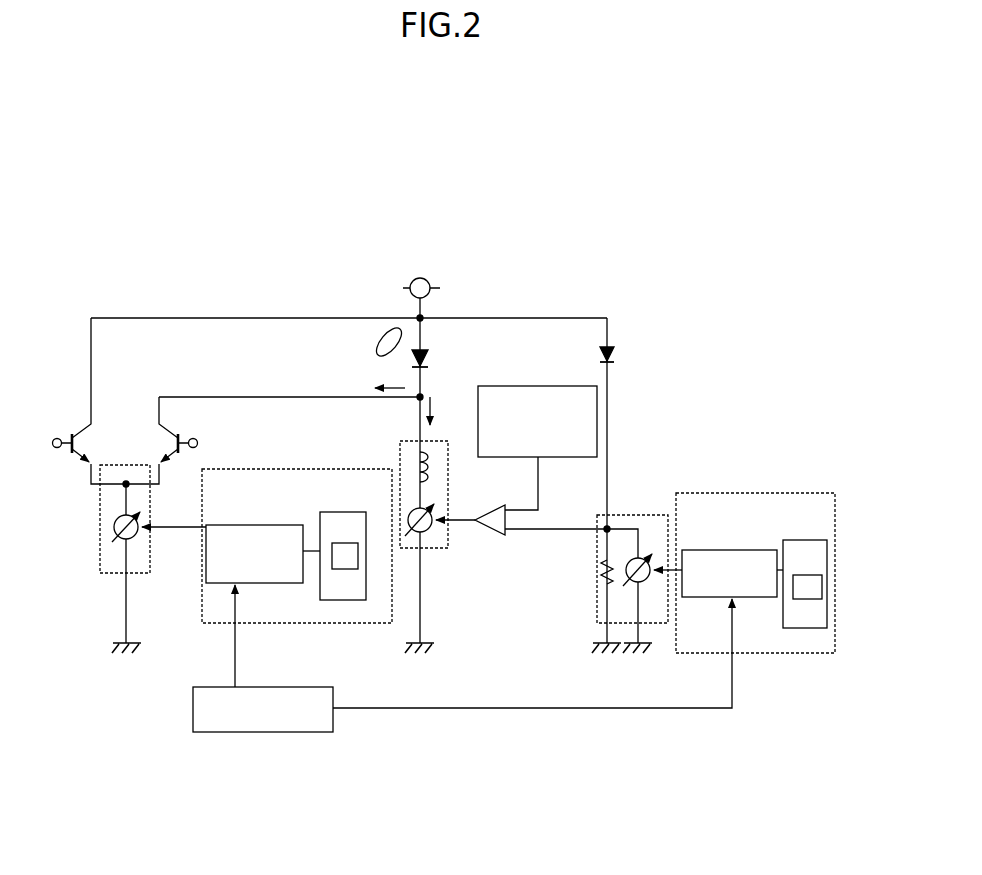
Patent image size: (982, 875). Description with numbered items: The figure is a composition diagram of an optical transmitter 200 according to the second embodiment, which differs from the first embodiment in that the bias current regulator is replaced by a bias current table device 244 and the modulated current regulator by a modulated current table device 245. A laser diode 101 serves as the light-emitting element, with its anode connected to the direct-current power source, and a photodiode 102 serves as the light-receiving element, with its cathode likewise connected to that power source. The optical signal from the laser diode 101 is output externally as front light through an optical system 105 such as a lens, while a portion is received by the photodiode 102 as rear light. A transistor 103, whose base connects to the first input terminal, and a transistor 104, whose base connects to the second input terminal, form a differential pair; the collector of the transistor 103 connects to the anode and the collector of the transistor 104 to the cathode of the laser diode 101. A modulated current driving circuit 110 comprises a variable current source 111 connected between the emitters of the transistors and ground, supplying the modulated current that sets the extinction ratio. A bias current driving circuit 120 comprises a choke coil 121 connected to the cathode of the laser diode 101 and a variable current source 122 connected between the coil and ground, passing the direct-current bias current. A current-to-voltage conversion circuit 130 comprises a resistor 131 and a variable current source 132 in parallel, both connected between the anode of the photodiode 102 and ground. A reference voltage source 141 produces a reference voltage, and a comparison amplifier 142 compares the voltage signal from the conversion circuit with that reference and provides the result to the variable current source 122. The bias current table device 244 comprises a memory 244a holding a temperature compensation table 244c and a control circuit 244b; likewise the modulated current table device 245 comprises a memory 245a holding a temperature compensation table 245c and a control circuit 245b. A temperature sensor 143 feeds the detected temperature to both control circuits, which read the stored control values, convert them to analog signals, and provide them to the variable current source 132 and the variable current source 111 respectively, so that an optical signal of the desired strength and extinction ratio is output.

The optical transmitter 200 is at (212, 286).
The laser diode 101 is at (428, 352).
The photodiode 102 is at (615, 353).
The transistor 103 is at (80, 446).
The transistor 104 is at (166, 431).
The optical system 105 is at (378, 350).
The modulated current driving circuit 110 is at (100, 517).
The variable current source 111 is at (113, 537).
The bias current driving circuit 120 is at (448, 505).
The choke coil 121 is at (429, 455).
The variable current source 122 is at (427, 532).
The current-to-voltage conversion circuit 130 is at (617, 515).
The resistor 131 is at (603, 584).
The variable current source 132 is at (646, 556).
The reference voltage source 141 is at (535, 386).
The comparison amplifier 142 is at (500, 536).
The temperature sensor 143 is at (285, 732).
The modulated current table device 245 is at (357, 469).
The memory 245a is at (328, 600).
The control circuit 245b is at (207, 583).
The temperature compensation table 245c is at (352, 569).
The bias current table device 244 is at (755, 493).
The memory 244a is at (800, 628).
The control circuit 244b is at (712, 597).
The temperature compensation table 244c is at (812, 599).